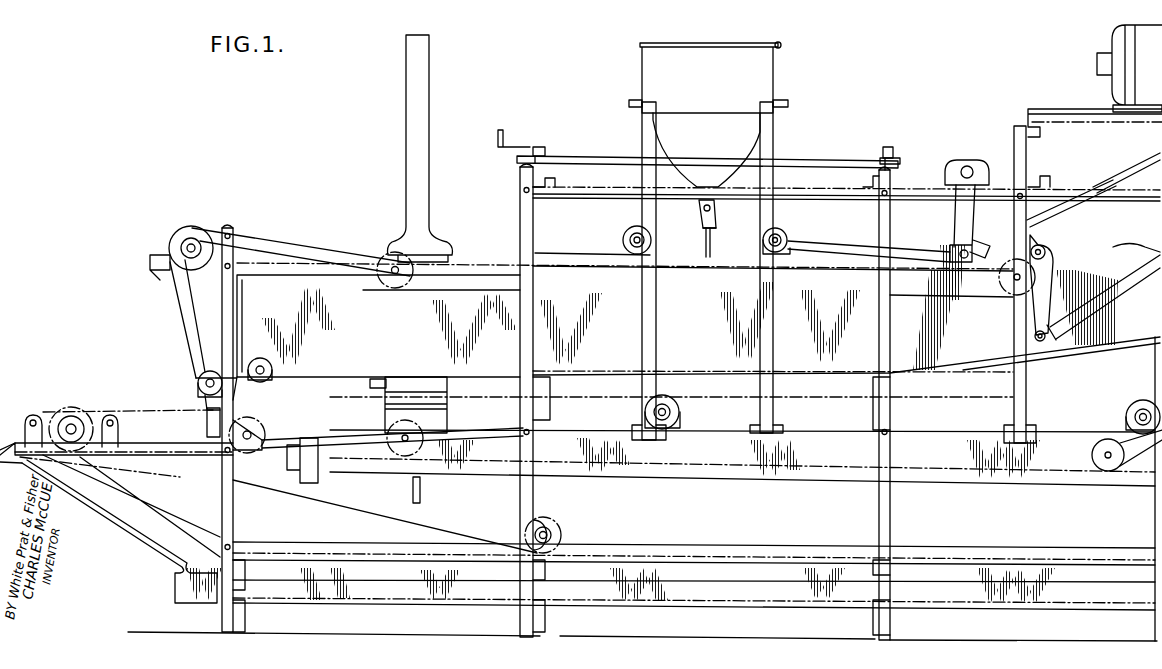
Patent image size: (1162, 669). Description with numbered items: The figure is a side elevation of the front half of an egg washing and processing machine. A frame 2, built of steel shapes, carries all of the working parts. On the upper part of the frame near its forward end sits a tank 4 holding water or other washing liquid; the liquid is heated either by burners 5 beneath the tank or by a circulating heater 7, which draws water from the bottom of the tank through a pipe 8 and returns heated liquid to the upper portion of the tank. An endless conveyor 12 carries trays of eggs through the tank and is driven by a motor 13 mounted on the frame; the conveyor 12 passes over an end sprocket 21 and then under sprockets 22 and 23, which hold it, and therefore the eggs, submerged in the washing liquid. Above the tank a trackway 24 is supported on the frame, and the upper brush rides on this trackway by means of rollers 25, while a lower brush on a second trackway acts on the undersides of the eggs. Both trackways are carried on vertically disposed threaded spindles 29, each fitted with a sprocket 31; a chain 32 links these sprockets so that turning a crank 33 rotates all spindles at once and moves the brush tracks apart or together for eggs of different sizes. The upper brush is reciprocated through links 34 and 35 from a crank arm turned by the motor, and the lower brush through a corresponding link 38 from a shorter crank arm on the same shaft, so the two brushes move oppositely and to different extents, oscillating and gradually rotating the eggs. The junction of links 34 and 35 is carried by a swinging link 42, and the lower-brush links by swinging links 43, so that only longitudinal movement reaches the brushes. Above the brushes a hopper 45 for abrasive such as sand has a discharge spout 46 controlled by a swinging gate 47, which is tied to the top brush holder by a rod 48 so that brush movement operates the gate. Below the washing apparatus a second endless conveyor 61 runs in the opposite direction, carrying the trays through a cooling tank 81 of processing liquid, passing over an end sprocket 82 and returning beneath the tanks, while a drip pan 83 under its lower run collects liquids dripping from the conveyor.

The frame 2 is at (878, 510).
The tank 4 is at (334, 370).
The burners 5 is at (812, 419).
The circulating heater 7 is at (447, 389).
The pipe 8 is at (372, 383).
The endless conveyor 12 is at (212, 235).
The motor 13 is at (1138, 43).
The end sprocket 21 is at (178, 246).
The sprocket 22 is at (388, 258).
The sprocket 23 is at (1002, 270).
The trackway 24 is at (546, 262).
The rollers 25 is at (624, 240).
The threaded spindles 29 is at (540, 148).
The sprockets 31 is at (896, 159).
The chain 32 is at (812, 162).
The crank 33 is at (503, 136).
The link 34 is at (815, 256).
The link 35 is at (1112, 183).
The link 38 is at (1106, 305).
The swinging link 42 is at (966, 221).
The swinging links 43 is at (1040, 297).
The hopper 45 is at (727, 111).
The discharge spout 46 is at (716, 208).
The swinging gate 47 is at (714, 226).
The rod 48 is at (712, 245).
The endless conveyor 61 is at (133, 420).
The cooling tank 81 is at (706, 473).
The end sprocket 82 is at (78, 416).
The drip pan 83 is at (728, 592).